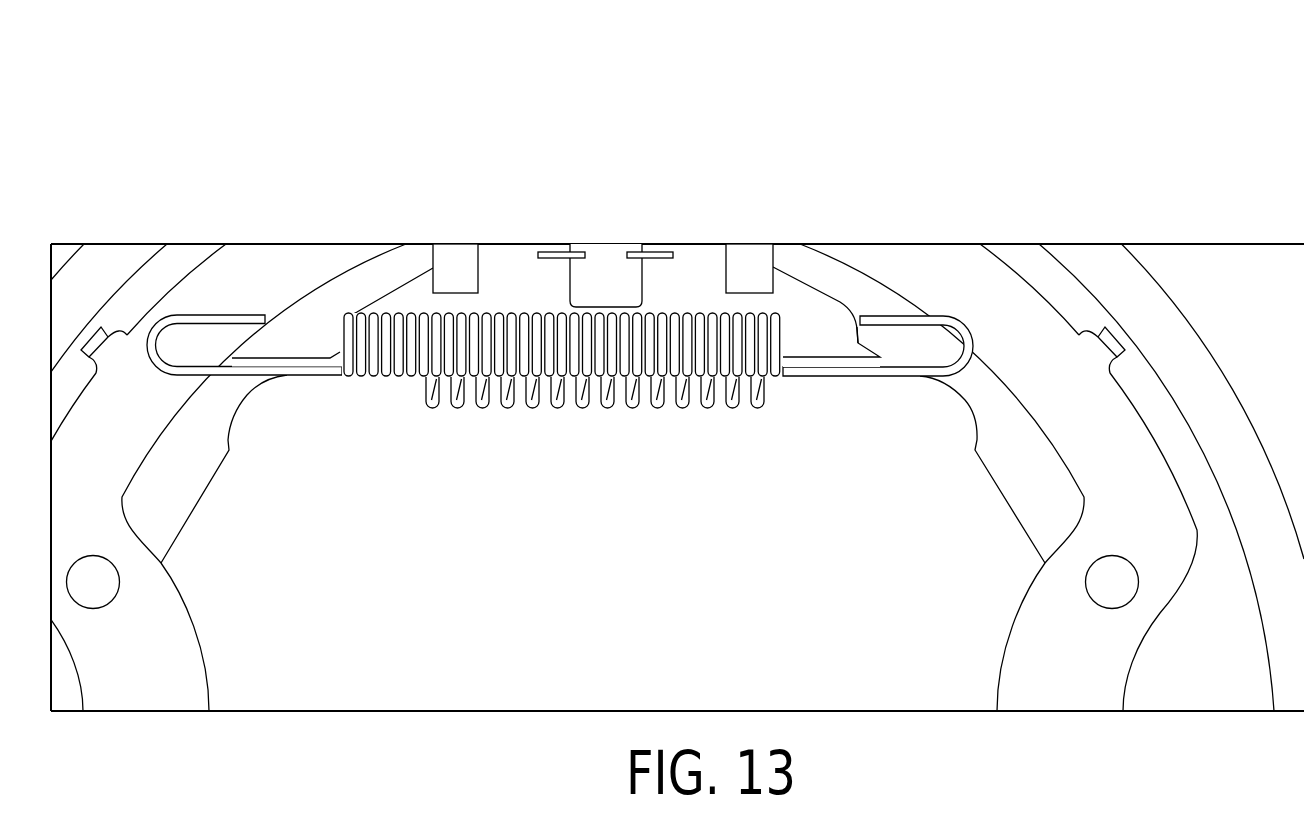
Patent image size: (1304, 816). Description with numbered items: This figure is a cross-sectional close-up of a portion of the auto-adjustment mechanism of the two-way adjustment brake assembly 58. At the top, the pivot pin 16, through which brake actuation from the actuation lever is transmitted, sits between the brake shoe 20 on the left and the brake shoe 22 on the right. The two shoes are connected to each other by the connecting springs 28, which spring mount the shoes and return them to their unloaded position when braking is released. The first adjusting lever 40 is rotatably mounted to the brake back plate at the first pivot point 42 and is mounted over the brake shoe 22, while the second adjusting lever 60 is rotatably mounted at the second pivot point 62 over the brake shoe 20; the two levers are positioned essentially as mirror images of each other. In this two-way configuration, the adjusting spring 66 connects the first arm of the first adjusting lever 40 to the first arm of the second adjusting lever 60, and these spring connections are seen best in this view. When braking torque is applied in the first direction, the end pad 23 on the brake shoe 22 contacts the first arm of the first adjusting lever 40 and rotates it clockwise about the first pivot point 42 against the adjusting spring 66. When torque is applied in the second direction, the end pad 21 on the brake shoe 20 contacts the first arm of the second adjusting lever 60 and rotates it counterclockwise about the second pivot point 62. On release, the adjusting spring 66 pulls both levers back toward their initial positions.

The two-way adjustment brake assembly 58 is at (346, 157).
The second adjusting lever 60 is at (222, 278).
The first adjusting lever 40 is at (1127, 427).
The second pivot point 62 is at (102, 590).
The first pivot point 42 is at (1097, 588).
The brake shoe 20 is at (188, 490).
The brake shoe 22 is at (1028, 517).
The end pad 21 is at (463, 257).
The end pad 23 is at (748, 262).
The pivot pin 16 is at (612, 266).
The connecting springs 28 is at (533, 405).
The adjusting spring 66 is at (382, 375).